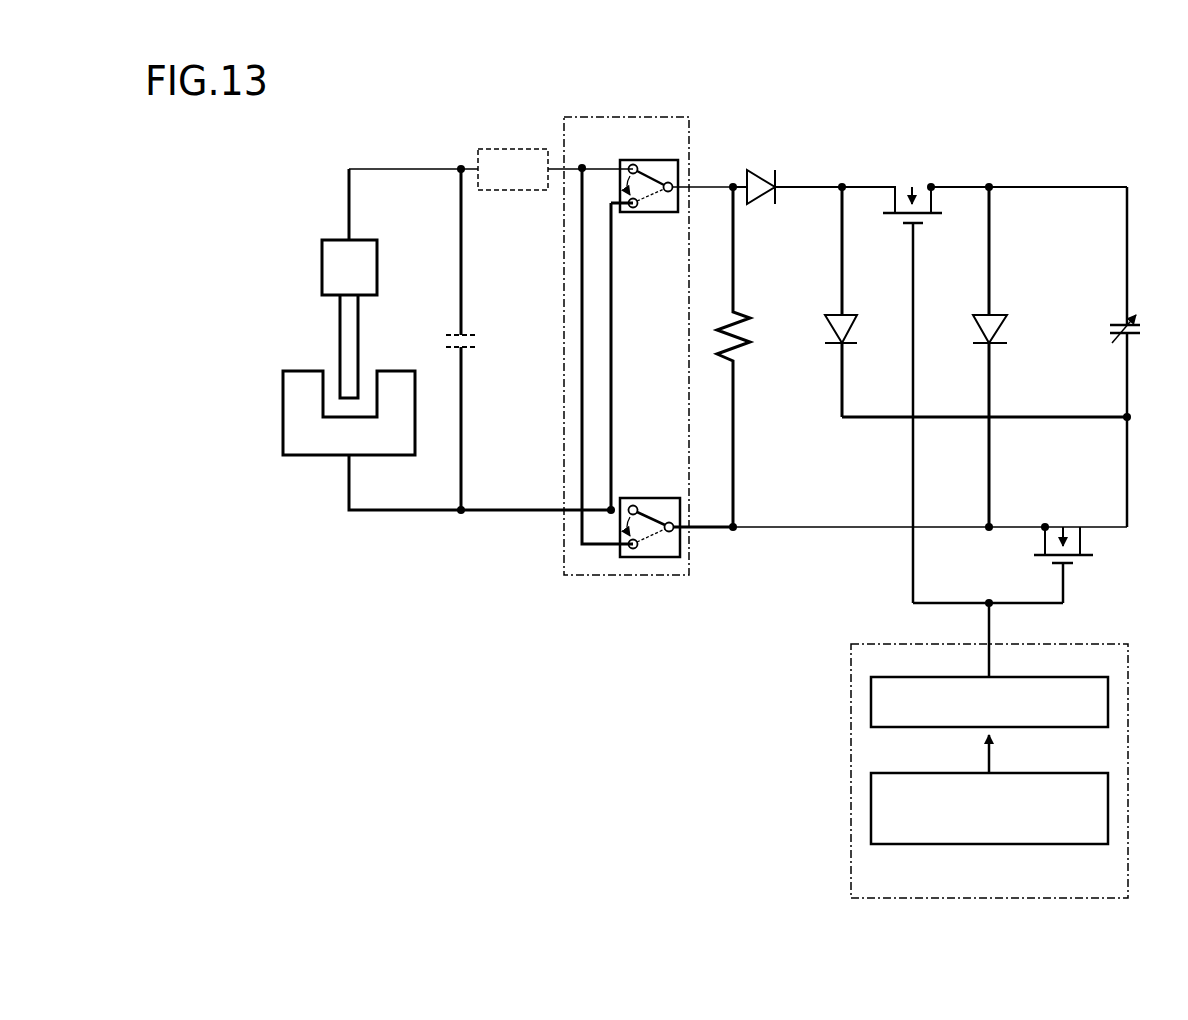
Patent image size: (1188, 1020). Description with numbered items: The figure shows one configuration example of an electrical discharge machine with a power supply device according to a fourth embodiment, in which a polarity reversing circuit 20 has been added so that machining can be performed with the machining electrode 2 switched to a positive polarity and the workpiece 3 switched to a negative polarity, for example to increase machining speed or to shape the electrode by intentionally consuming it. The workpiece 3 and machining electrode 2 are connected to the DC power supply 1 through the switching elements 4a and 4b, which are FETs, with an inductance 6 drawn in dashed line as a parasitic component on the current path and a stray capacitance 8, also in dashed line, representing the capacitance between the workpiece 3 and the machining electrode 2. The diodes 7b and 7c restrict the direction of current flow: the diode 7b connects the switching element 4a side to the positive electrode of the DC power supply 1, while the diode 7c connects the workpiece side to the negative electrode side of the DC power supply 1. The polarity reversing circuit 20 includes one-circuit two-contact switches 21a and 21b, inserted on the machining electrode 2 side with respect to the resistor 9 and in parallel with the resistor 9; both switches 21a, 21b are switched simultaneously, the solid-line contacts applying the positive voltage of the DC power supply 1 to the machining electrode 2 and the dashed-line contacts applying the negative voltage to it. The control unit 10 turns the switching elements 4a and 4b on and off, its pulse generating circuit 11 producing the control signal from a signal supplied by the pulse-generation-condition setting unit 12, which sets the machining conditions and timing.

The DC power supply 1 is at (1122, 323).
The machining electrode 2 is at (365, 238).
The workpiece 3 is at (388, 455).
The switching element 4a is at (904, 200).
The switching element 4b is at (1090, 558).
The inductance 6 is at (515, 148).
The diode 7b is at (765, 178).
The diode 7c is at (975, 313).
The stray capacitance 8 is at (470, 335).
The resistor 9 is at (728, 322).
The control unit 10 is at (1069, 645).
The pulse generating circuit 11 is at (1108, 700).
The pulse-generation-condition setting unit 12 is at (1108, 805).
The polarity reversing circuit 20 is at (670, 116).
The one-circuit two-contact switch 21a is at (668, 159).
The one-circuit two-contact switch 21b is at (667, 497).